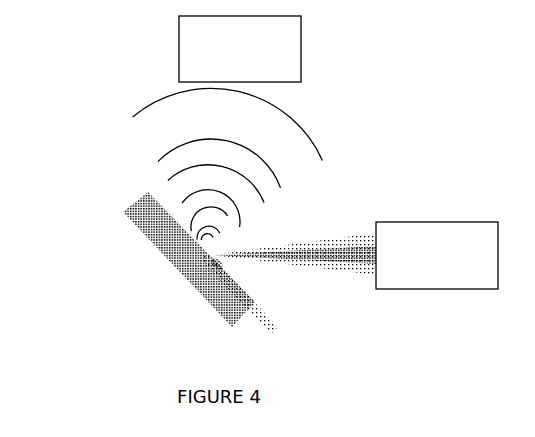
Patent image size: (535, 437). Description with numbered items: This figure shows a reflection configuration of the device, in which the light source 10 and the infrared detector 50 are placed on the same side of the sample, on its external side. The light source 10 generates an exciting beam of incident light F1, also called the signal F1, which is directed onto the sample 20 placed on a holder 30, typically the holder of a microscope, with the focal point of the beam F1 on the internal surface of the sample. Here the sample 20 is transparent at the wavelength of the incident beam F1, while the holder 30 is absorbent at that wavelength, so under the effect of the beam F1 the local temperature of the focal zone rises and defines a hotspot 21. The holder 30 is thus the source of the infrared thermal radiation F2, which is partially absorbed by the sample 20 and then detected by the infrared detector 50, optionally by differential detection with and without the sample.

The light source 10 is at (437, 255).
The sample 20 is at (247, 303).
The hotspot 21 is at (228, 270).
The holder 30 is at (172, 276).
The infrared detector 50 is at (240, 49).
The incident beam F1 is at (294, 244).
The thermal radiation F2 is at (228, 164).